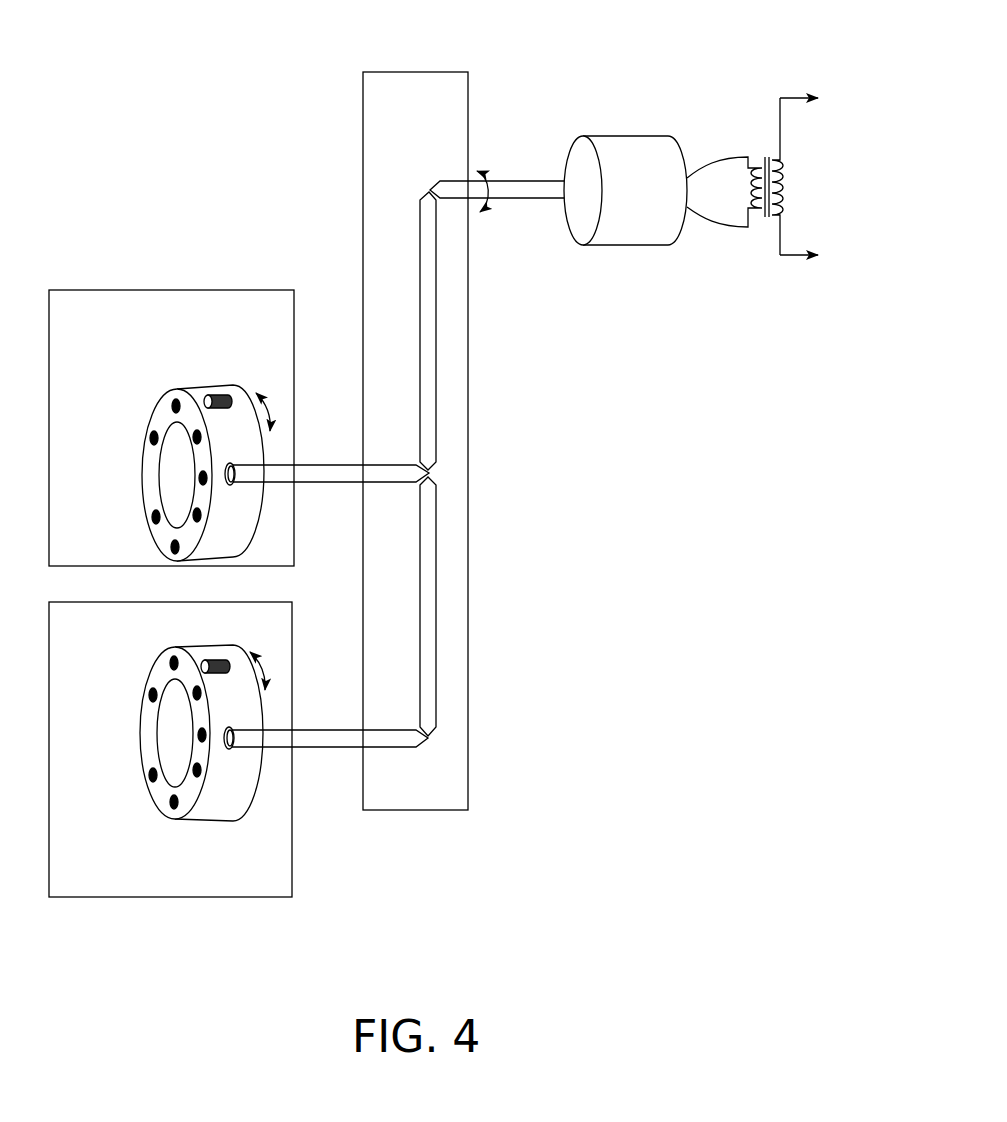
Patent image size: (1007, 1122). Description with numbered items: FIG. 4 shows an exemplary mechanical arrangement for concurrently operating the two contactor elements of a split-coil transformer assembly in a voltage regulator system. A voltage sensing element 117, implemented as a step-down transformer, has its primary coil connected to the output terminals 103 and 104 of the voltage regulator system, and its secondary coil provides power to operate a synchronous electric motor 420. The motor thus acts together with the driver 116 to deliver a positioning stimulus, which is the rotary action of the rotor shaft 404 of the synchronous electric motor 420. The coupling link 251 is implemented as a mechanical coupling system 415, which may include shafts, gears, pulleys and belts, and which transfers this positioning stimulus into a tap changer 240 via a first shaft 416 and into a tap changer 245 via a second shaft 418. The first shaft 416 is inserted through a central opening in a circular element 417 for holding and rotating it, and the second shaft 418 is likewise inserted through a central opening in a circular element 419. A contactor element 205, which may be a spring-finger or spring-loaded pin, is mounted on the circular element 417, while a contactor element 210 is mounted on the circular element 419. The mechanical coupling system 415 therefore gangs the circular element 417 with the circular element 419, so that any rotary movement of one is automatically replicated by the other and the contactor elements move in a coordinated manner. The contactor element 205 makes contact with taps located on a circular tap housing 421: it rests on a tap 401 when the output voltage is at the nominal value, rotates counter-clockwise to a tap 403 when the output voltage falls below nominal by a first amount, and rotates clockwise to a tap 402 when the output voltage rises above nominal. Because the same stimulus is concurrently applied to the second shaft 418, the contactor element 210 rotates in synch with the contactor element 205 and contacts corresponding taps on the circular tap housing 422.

The driver 116 is at (434, 54).
The mechanical coupling system 415 is at (415, 441).
The rotor shaft 404 is at (512, 181).
The coupling link 251 is at (588, 104).
The synchronous electric motor 420 is at (625, 190).
The voltage sensing element 117 is at (812, 187).
The output terminal 103 is at (821, 99).
The output terminal 104 is at (821, 256).
The tap changer 240 is at (239, 428).
The circular tap housing 421 is at (171, 442).
The tap 401 is at (171, 407).
The tap 402 is at (150, 440).
The tap 403 is at (194, 441).
The contactor element 205 is at (208, 395).
The circular element 417 is at (226, 386).
The first shaft 416 is at (303, 465).
The tap changer 245 is at (238, 749).
The circular tap housing 422 is at (160, 828).
The contactor element 210 is at (205, 660).
The circular element 419 is at (232, 649).
The second shaft 418 is at (297, 729).